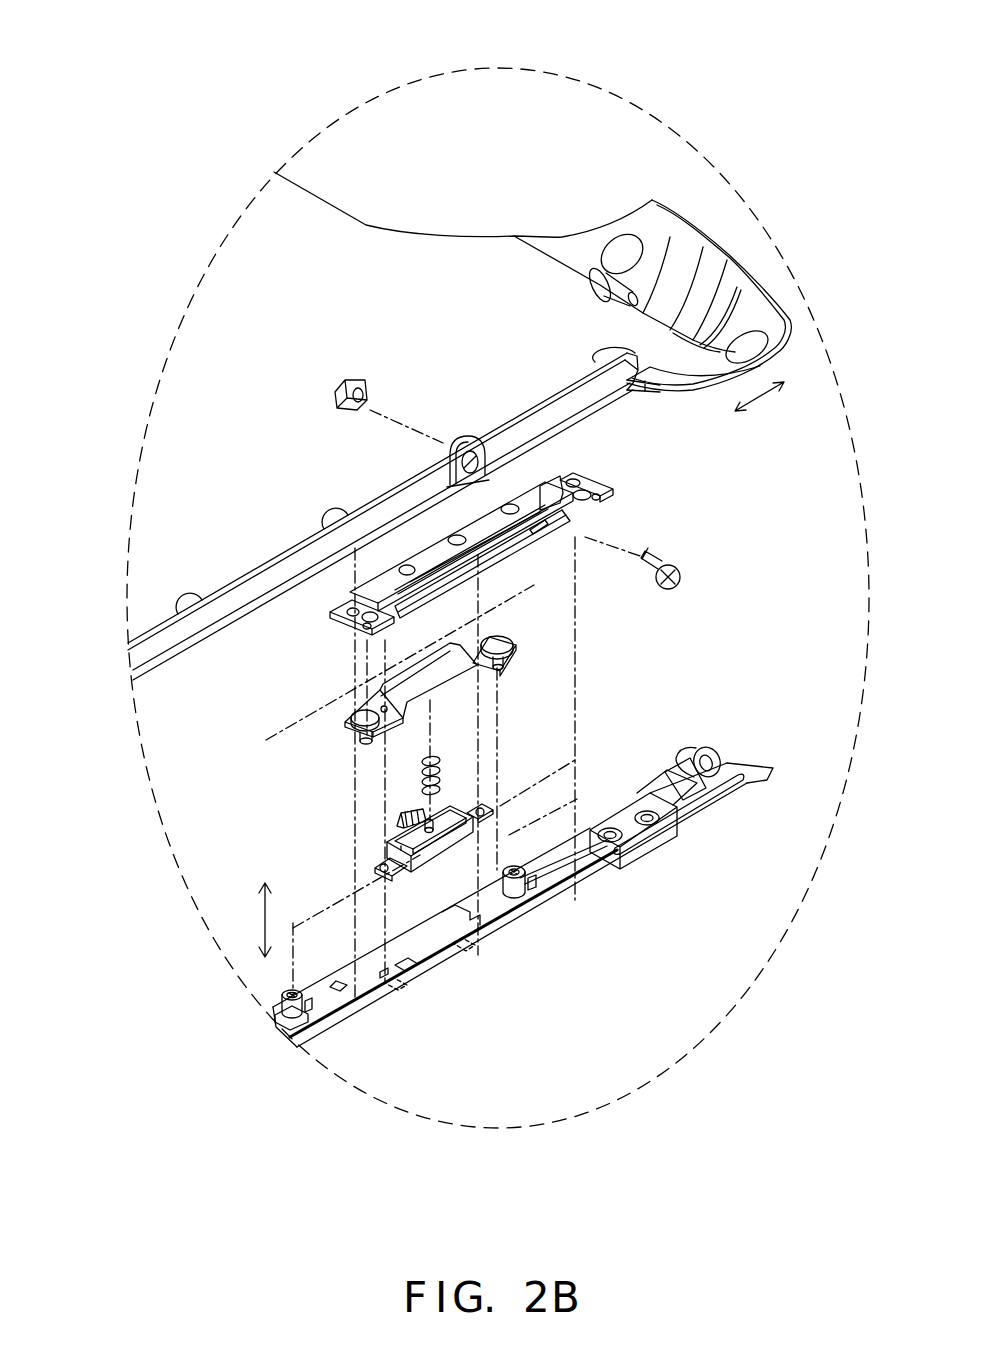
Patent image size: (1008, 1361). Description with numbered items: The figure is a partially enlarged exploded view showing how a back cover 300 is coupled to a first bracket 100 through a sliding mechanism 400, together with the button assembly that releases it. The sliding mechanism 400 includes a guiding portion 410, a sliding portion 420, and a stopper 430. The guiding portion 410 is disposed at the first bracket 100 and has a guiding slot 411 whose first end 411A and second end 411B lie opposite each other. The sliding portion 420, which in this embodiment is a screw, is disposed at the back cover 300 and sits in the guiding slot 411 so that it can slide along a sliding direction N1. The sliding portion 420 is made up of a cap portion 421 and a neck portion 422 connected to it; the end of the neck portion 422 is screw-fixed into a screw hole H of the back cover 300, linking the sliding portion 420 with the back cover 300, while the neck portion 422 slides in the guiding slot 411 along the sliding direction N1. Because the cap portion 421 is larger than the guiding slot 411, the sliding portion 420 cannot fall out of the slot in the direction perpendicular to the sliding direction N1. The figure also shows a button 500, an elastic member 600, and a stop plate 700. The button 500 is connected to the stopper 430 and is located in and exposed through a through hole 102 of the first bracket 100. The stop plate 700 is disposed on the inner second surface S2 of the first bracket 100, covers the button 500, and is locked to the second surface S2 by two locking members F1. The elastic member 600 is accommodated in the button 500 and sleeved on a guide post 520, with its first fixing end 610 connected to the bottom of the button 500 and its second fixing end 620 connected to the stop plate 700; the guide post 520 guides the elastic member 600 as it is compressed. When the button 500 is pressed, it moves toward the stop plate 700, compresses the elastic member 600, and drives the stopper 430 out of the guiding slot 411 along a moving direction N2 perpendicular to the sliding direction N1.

The first bracket 100 is at (453, 923).
The through hole 102 is at (460, 958).
The back cover 300 is at (206, 315).
The sliding mechanism 400 is at (117, 8).
The guiding portion 410 is at (139, 21).
The guiding slot 411 is at (693, 604).
The first end 411A is at (565, 533).
The second end 411B is at (525, 626).
The sliding portion 420 is at (770, 549).
The cap portion 421 is at (681, 570).
The neck portion 422 is at (644, 560).
The stopper 430 is at (400, 822).
The button 500 is at (452, 845).
The guide post 520 is at (455, 828).
The elastic member 600 is at (234, 746).
The first fixing end 610 is at (429, 745).
The second fixing end 620 is at (420, 794).
The stop plate 700 is at (414, 684).
The locking members F1 is at (361, 719).
The screw hole H is at (486, 466).
The sliding direction N1 is at (760, 410).
The moving direction N2 is at (245, 920).
The second surface S2 is at (429, 939).